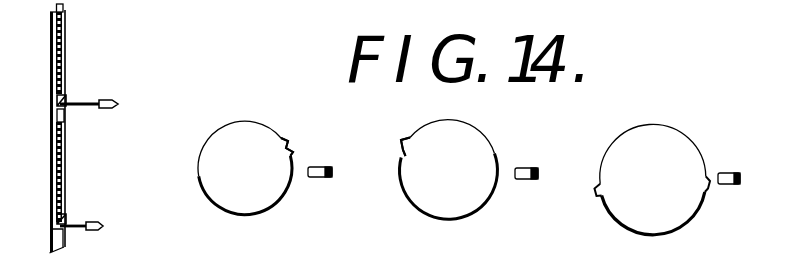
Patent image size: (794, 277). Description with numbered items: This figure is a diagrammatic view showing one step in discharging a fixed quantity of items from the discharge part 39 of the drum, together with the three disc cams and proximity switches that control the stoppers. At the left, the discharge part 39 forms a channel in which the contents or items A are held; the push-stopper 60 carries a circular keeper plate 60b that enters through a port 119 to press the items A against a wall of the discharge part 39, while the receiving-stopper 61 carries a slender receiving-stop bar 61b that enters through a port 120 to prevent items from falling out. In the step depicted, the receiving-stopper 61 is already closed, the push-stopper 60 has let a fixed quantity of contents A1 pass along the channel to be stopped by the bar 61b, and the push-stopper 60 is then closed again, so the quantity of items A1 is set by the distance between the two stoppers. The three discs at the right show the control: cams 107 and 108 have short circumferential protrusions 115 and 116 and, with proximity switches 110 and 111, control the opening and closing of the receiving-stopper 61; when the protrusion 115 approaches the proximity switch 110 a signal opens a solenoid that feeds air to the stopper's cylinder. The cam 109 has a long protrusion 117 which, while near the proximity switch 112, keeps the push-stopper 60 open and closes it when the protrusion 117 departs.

The discharge part 39 is at (52, 178).
The contents or items A is at (63, 29).
The contents A1 is at (64, 170).
The push-stopper 60 is at (118, 104).
The circular keeper plate 60b is at (67, 100).
The receiving-stopper 61 is at (103, 226).
The receiving-stop bar 61b is at (66, 219).
The port 119 is at (66, 114).
The port 120 is at (64, 231).
The cam 107 is at (238, 212).
The cam 108 is at (441, 213).
The cam 109 is at (645, 131).
The proximity switch 110 is at (318, 177).
The proximity switch 111 is at (525, 179).
The proximity switch 112 is at (727, 184).
The short protrusion 115 is at (290, 143).
The short protrusion 116 is at (401, 143).
The long protrusion 117 is at (640, 226).